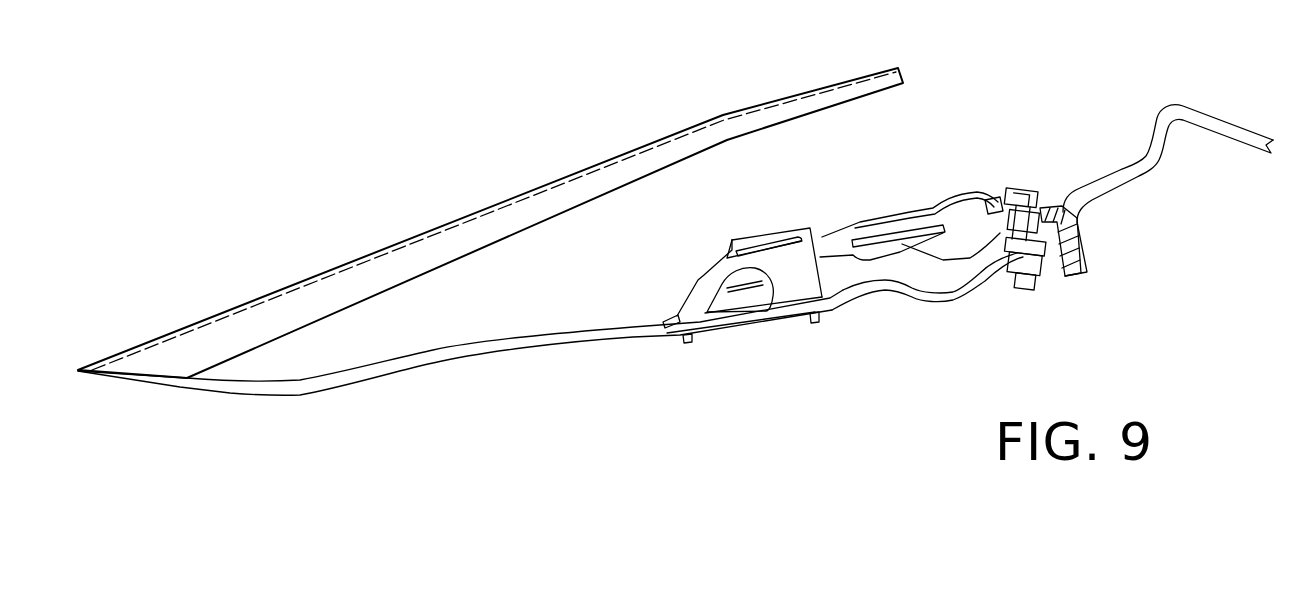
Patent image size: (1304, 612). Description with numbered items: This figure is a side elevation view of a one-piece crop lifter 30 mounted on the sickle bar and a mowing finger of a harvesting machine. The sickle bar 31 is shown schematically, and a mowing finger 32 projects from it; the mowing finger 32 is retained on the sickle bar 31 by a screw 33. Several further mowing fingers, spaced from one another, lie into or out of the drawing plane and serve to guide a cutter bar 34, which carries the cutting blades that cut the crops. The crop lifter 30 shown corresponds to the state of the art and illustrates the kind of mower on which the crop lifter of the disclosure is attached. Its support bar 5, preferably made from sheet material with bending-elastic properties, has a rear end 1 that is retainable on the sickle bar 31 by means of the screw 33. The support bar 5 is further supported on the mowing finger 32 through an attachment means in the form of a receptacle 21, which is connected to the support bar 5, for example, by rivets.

The rear end 1 is at (972, 282).
The support bar 5 is at (433, 360).
The receptacle 21 is at (730, 245).
The crop lifter 30 is at (398, 155).
The sickle bar 31 is at (1167, 110).
The mowing finger 32 is at (818, 247).
The screw 33 is at (1014, 188).
The cutter bar 34 is at (987, 198).